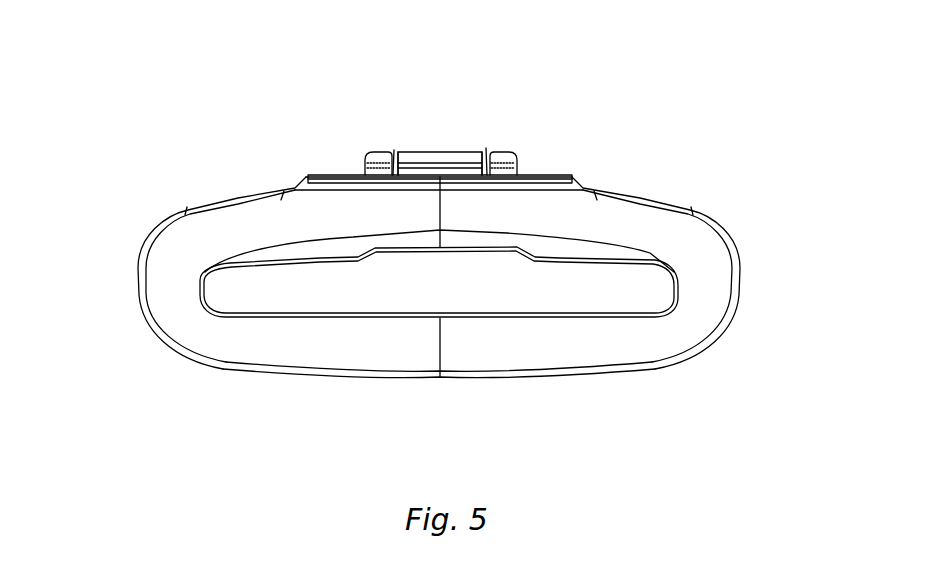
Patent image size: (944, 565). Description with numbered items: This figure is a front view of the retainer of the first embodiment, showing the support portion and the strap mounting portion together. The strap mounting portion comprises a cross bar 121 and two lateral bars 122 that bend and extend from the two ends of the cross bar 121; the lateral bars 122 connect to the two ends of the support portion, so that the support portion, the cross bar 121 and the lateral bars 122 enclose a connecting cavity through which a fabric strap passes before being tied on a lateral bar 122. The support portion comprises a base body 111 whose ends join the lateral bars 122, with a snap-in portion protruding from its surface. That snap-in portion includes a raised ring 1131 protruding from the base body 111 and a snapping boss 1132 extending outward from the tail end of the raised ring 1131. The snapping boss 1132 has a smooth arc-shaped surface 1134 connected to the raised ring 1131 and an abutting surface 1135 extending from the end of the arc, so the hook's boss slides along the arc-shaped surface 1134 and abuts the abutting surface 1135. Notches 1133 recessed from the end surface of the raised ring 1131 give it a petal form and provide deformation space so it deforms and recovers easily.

The base body 111 is at (392, 223).
The cross bar 121 is at (422, 365).
The lateral bar 122 is at (160, 298).
The raised ring 1131 is at (486, 158).
The snapping boss 1132 is at (557, 116).
The notch 1133 is at (487, 148).
The arc-shaped surface 1134 is at (513, 157).
The abutting surface 1135 is at (516, 162).